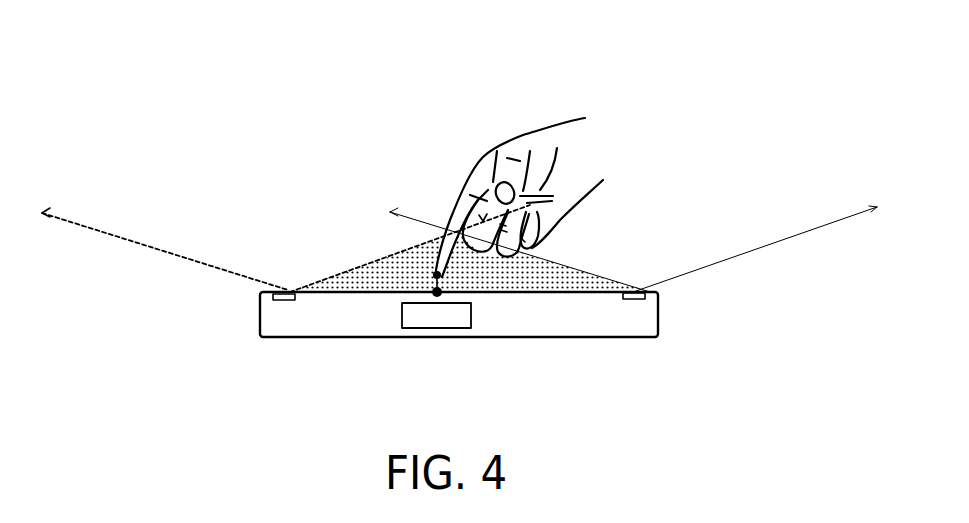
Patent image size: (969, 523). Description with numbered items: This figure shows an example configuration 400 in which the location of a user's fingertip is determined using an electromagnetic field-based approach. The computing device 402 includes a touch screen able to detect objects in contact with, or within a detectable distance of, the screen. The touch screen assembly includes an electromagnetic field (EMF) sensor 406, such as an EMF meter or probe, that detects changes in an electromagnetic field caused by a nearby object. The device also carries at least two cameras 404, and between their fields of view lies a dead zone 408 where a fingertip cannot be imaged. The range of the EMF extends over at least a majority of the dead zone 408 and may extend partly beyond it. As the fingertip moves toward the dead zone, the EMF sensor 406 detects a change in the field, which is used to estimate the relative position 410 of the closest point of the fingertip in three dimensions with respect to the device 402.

The example configuration 400 is at (798, 118).
The device 402 is at (658, 325).
The cameras 404 is at (287, 290).
The electromagnetic field (EMF) sensor 406 is at (411, 328).
The dead zone 408 is at (377, 271).
The position of the fingertip 410 is at (464, 286).